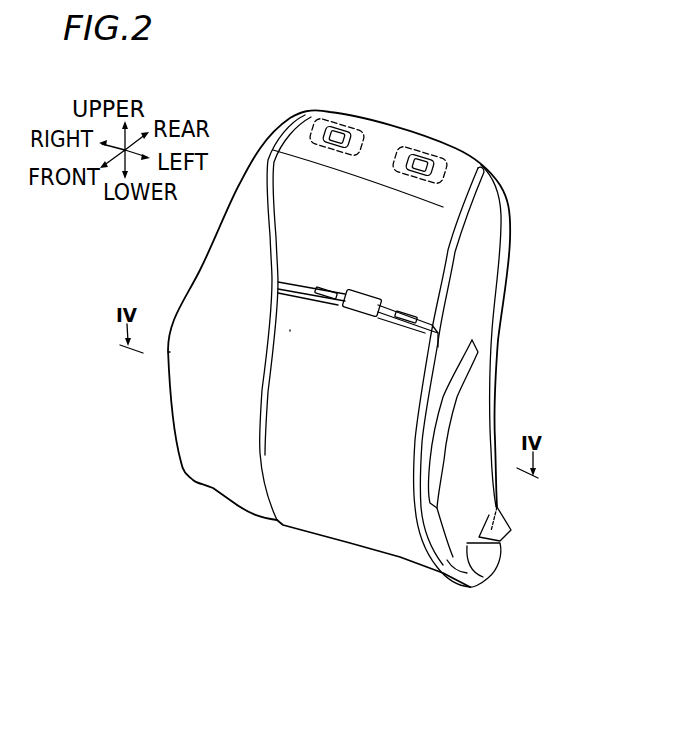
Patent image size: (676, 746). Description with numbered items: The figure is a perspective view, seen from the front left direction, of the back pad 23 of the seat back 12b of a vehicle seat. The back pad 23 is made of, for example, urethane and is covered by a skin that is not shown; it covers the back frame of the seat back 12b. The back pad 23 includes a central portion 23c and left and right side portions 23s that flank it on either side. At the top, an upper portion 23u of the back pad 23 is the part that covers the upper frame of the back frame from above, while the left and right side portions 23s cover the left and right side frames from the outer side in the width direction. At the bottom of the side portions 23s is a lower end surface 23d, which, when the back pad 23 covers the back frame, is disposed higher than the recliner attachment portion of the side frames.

The seat back 12b is at (515, 162).
The back pad 23 is at (463, 282).
The upper portion 23u is at (377, 150).
The side portions 23s is at (213, 403).
The central portion 23c is at (342, 420).
The lower end surface 23d is at (490, 562).